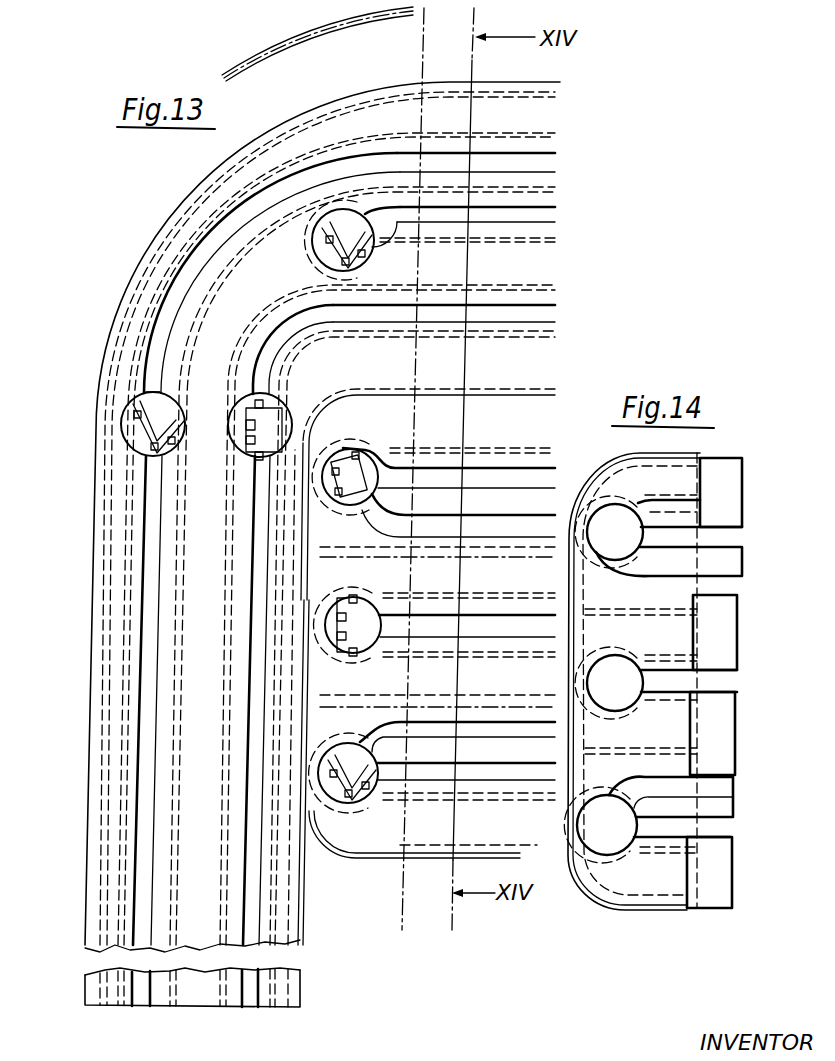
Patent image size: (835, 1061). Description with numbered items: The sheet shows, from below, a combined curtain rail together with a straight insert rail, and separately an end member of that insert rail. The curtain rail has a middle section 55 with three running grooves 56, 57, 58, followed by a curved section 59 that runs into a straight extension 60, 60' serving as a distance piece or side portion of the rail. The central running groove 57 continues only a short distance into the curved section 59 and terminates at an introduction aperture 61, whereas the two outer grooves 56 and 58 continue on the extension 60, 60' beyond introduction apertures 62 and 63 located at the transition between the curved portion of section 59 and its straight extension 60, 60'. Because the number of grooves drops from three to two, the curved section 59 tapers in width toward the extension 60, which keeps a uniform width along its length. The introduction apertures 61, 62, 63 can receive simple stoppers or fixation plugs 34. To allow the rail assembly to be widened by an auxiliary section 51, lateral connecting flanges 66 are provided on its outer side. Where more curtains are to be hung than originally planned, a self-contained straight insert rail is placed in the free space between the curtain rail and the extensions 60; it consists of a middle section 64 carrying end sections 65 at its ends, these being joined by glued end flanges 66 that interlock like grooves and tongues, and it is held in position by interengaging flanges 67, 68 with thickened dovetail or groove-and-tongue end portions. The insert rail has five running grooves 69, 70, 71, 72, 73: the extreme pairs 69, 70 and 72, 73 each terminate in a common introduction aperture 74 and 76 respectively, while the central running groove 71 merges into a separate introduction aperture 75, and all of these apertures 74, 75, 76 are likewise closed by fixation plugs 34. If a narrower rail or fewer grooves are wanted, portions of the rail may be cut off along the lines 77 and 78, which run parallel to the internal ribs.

In FIG. 13, the fixation plug 34 is at (141, 440).
In FIG. 13, the auxiliary section 51 is at (262, 78).
In FIG. 13, the middle section 55 is at (572, 105).
In FIG. 13, the running groove 56 is at (562, 162).
In FIG. 13, the central running groove 57 is at (550, 217).
In FIG. 13, the running groove 58 is at (553, 311).
In FIG. 13, the curved section 59 is at (245, 305).
In FIG. 13, the extension 60 is at (302, 569).
In FIG. 13, the extension 60' is at (174, 989).
In FIG. 13, the introduction aperture 61 is at (307, 250).
In FIG. 13, the introduction aperture 62 is at (112, 412).
In FIG. 13, the introduction aperture 63 is at (228, 403).
In FIG. 13, the middle section of insert rail 64 is at (534, 883).
In FIG. 13, the end section 65 is at (348, 882).
In FIG. 14, the end section 65 is at (627, 934).
In FIG. 13, the connecting flange 66 is at (453, 65).
In FIG. 14, the connecting flange 66 is at (713, 900).
In FIG. 13, the interengaging flange 67 is at (403, 858).
In FIG. 14, the interengaging flange 67 is at (673, 913).
In FIG. 13, the interengaging flange 68 is at (300, 973).
In FIG. 13, the running groove 69 is at (523, 485).
In FIG. 14, the running groove 69 is at (690, 521).
In FIG. 13, the running groove 70 is at (523, 528).
In FIG. 14, the running groove 70 is at (663, 581).
In FIG. 13, the central running groove 71 is at (520, 632).
In FIG. 14, the central running groove 71 is at (688, 677).
In FIG. 13, the running groove 72 is at (520, 733).
In FIG. 14, the running groove 72 is at (671, 794).
In FIG. 13, the running groove 73 is at (520, 778).
In FIG. 14, the running groove 73 is at (683, 834).
In FIG. 14, the introduction aperture 74 is at (609, 532).
In FIG. 14, the introduction aperture 75 is at (609, 683).
In FIG. 14, the introduction aperture 76 is at (630, 805).
In FIG. 13, the cutting line 77 is at (433, 707).
In FIG. 13, the cutting line 78 is at (440, 552).